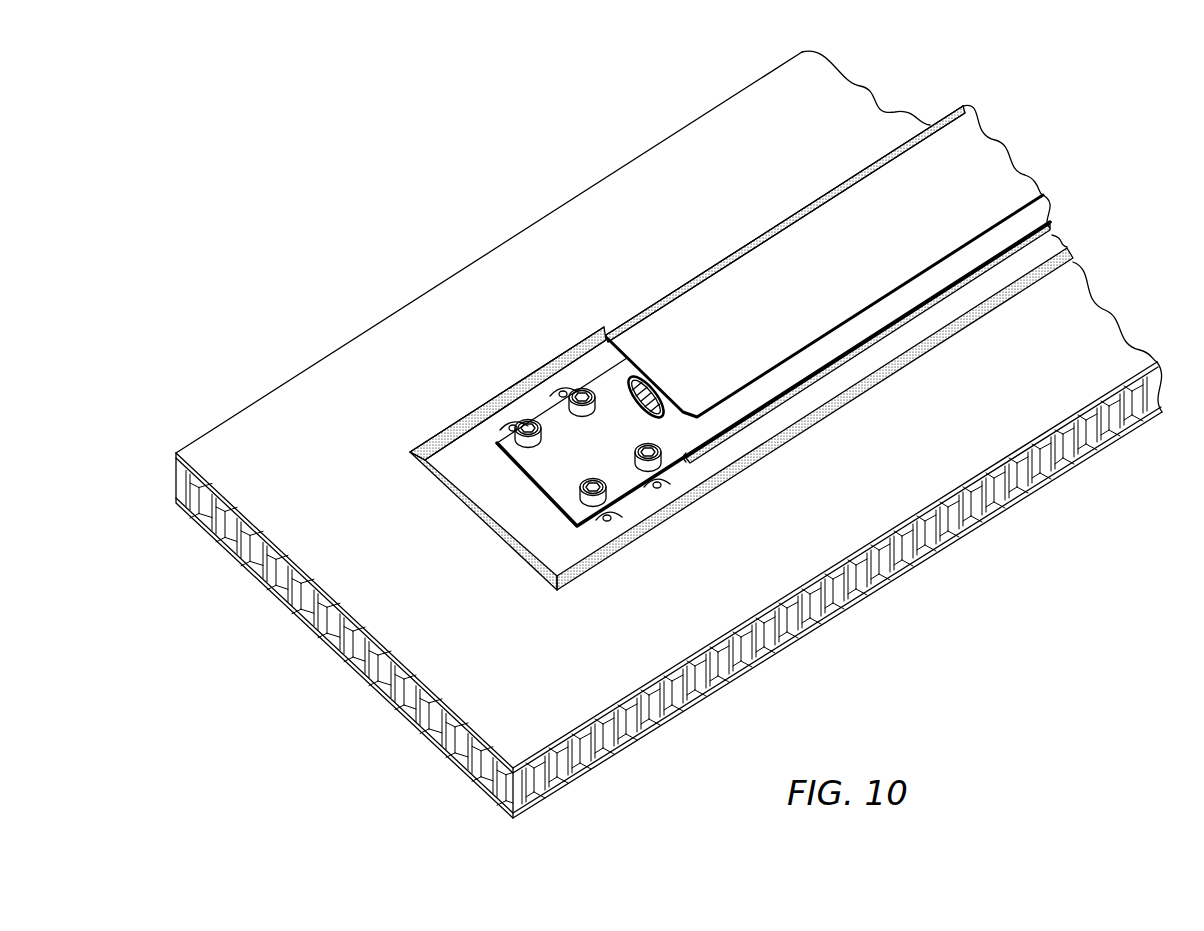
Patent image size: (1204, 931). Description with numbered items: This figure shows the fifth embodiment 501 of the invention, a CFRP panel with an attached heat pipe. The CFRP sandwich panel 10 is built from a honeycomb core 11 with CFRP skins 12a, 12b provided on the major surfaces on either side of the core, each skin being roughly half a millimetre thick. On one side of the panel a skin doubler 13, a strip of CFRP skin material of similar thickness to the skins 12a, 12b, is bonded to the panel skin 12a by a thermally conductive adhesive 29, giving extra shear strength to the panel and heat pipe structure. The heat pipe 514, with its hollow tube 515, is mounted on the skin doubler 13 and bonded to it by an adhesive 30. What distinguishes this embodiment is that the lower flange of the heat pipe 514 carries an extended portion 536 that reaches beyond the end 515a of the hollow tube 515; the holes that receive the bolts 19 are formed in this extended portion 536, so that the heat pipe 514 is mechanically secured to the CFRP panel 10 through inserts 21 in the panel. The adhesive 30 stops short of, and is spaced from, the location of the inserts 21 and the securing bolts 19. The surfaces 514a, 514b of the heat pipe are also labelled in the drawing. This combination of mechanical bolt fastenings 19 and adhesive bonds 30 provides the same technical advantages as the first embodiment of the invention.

The CFRP sandwich panel 10 is at (441, 755).
The honeycomb core 11 is at (748, 653).
The skin 12a is at (967, 477).
The skin 12b is at (947, 543).
The skin doubler 13 is at (450, 465).
The bolts 19 is at (664, 488).
The inserts 21 is at (657, 492).
The thermally conductive adhesive 29 is at (451, 431).
The adhesive 30 is at (1000, 262).
The fifth embodiment 501 is at (507, 158).
The heat pipe 514 is at (866, 161).
The cover plate top surface 514a is at (652, 315).
The cover plate flange 514b is at (882, 322).
The hollow tube 515 is at (627, 383).
The end of the hollow tube 515a is at (672, 418).
The extended portion of the lower flange 536 is at (555, 415).